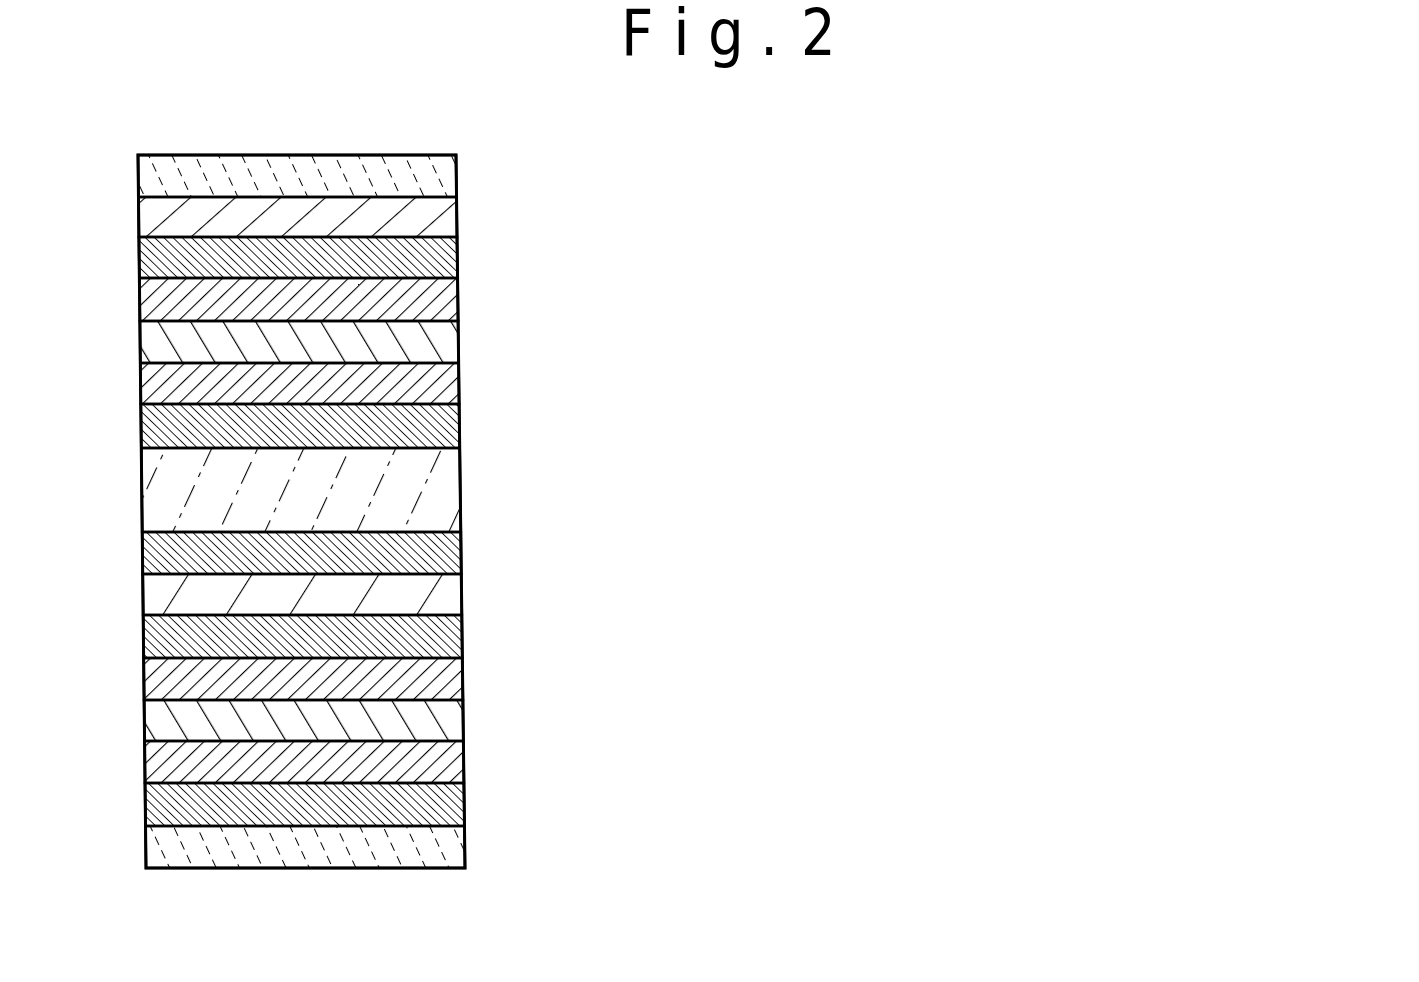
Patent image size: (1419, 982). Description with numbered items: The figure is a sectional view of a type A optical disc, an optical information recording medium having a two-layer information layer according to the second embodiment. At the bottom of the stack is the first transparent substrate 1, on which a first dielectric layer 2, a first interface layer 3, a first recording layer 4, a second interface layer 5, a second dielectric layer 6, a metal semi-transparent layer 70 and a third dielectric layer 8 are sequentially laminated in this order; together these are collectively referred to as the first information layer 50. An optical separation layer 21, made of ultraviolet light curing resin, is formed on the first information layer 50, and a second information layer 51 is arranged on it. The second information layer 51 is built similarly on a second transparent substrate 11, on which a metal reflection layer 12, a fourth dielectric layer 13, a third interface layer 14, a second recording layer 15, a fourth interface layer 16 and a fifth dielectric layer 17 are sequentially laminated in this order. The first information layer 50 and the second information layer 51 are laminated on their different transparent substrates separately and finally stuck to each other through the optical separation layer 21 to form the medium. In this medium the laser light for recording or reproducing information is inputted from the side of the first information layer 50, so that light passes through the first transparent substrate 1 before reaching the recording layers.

The first transparent substrate 1 is at (456, 847).
The first dielectric layer 2 is at (460, 804).
The first interface layer 3 is at (459, 762).
The first recording layer 4 is at (454, 720).
The second interface layer 5 is at (458, 679).
The second dielectric layer 6 is at (458, 636).
The metal semi-transparent layer 70 is at (452, 594).
The third dielectric layer 8 is at (457, 553).
The optical separation layer 21 is at (456, 490).
The fifth dielectric layer 17 is at (455, 426).
The fourth interface layer 16 is at (455, 383).
The second recording layer 15 is at (454, 342).
The third interface layer 14 is at (454, 299).
The fourth dielectric layer 13 is at (453, 257).
The metal reflection layer 12 is at (453, 217).
The second transparent substrate 11 is at (452, 176).
The first information layer 50 is at (980, 503).
The second information layer 51 is at (975, 123).